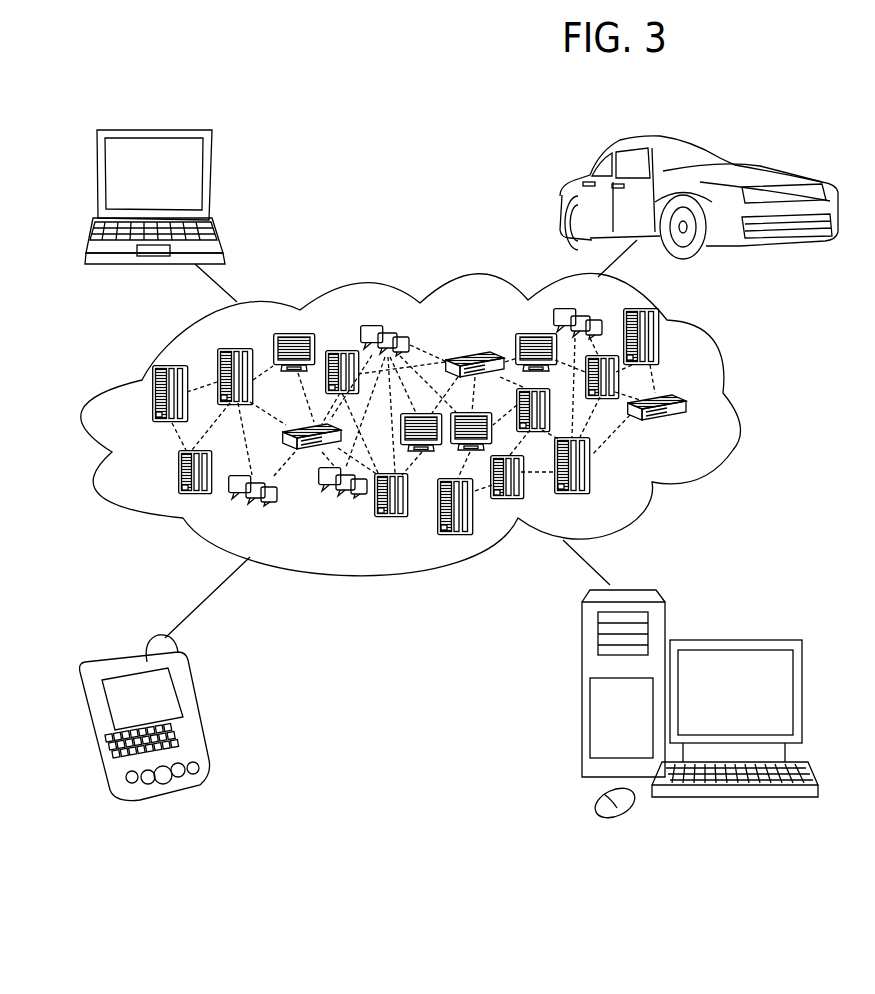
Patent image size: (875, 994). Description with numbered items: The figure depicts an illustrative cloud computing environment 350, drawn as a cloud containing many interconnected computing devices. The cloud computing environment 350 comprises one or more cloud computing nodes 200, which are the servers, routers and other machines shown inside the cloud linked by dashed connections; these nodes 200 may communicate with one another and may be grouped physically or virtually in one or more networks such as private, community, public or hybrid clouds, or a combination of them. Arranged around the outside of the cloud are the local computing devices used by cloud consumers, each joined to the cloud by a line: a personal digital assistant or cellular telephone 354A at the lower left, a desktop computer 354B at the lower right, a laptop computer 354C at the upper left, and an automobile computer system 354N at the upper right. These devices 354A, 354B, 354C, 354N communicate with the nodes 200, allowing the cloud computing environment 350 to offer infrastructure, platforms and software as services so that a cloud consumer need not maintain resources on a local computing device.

The cloud computing nodes 200 is at (702, 441).
The cloud computing environment 350 is at (737, 408).
The personal digital assistant or cellular telephone 354A is at (198, 711).
The desktop computer 354B is at (733, 638).
The laptop computer 354C is at (212, 181).
The automobile computer system 354N is at (562, 197).